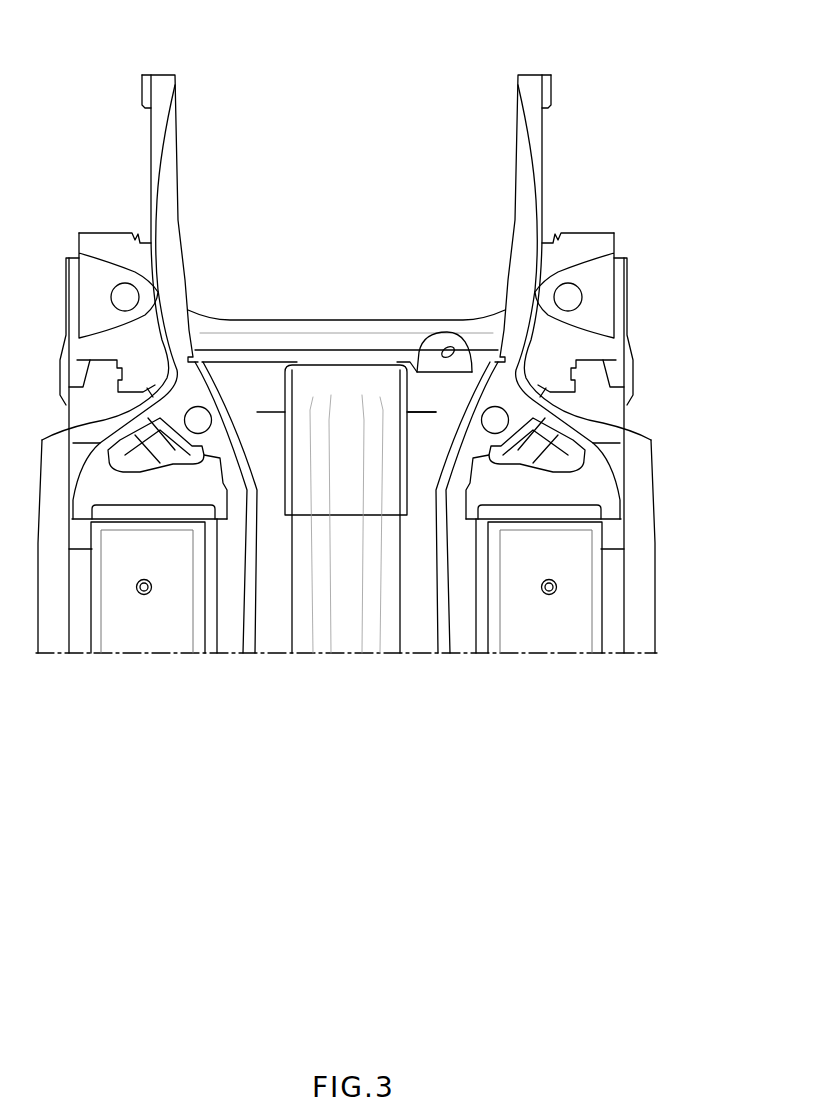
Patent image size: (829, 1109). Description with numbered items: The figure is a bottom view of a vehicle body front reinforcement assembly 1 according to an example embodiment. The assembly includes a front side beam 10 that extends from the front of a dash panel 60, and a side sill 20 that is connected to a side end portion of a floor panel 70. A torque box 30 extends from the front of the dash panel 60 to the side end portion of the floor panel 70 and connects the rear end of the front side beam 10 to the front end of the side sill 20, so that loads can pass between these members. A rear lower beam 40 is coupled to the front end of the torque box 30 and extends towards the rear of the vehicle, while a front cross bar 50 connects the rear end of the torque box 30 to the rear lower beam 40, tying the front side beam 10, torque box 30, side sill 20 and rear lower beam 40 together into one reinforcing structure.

The vehicle body front reinforcement assembly 1 is at (58, 33).
The front side beam 10 is at (527, 127).
The side sill 20 is at (643, 617).
The torque box 30 is at (565, 432).
The rear lower beam 40 is at (470, 443).
The front cross bar 50 is at (593, 497).
The dash panel 60 is at (265, 333).
The floor panel 70 is at (547, 638).